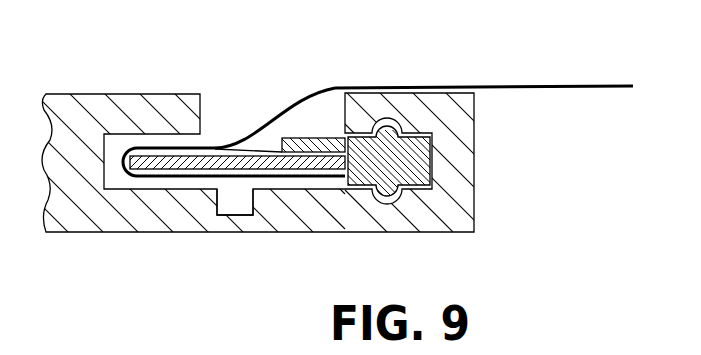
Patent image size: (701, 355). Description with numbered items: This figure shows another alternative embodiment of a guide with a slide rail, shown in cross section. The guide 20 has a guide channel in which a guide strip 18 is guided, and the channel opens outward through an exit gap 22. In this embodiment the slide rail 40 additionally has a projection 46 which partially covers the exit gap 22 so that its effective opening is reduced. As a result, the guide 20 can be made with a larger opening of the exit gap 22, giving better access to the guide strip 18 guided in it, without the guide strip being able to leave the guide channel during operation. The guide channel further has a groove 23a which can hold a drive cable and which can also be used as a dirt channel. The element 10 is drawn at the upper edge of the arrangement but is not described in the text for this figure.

The cover sheet 10 is at (575, 84).
The guide strip 18 is at (178, 168).
The guide 20 is at (97, 112).
The exit gap 22 is at (228, 115).
The groove 23a is at (241, 202).
The slide rail 40 is at (398, 165).
The projection 46 is at (312, 145).